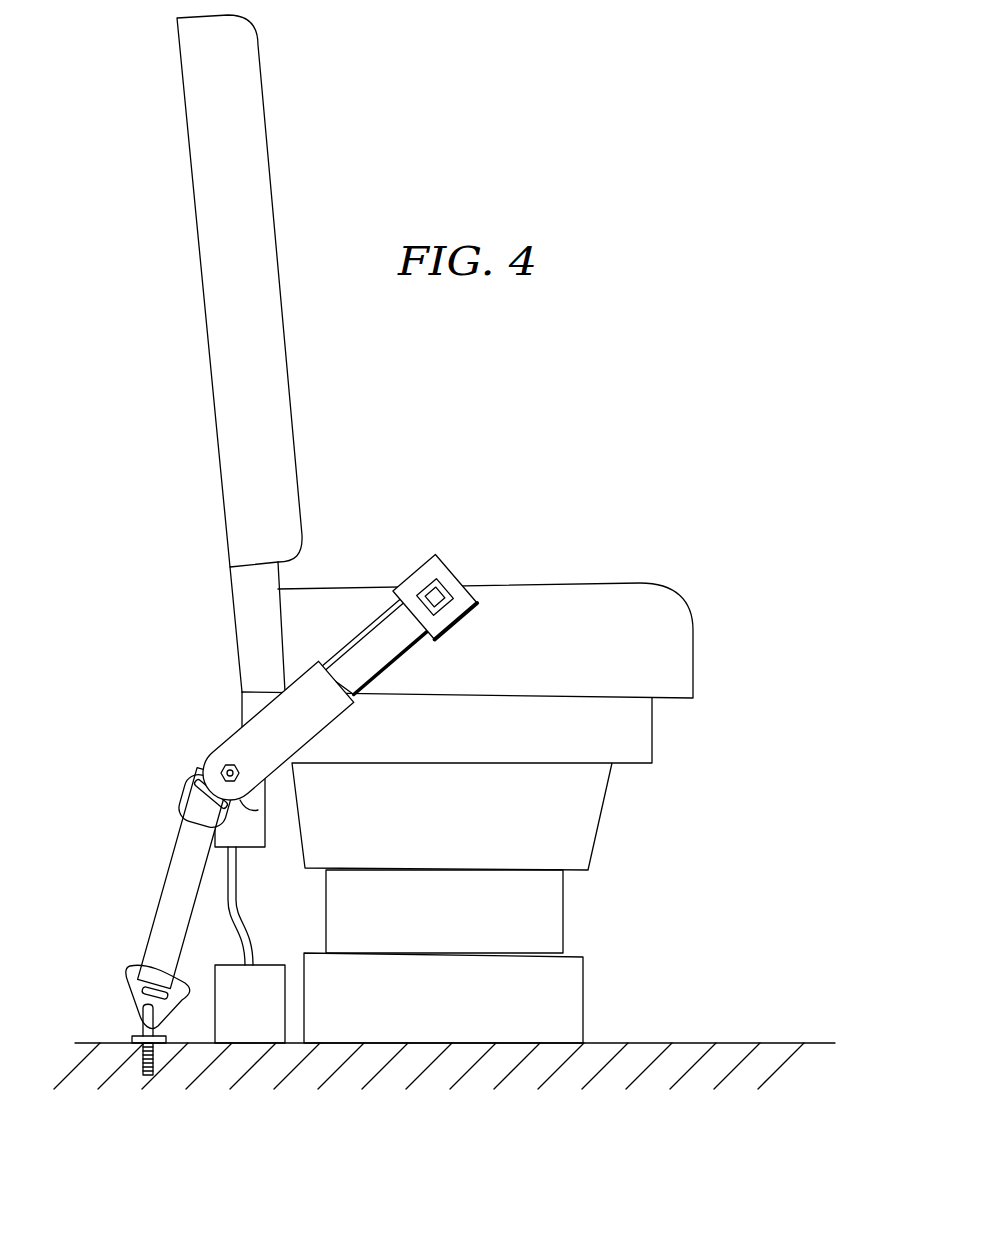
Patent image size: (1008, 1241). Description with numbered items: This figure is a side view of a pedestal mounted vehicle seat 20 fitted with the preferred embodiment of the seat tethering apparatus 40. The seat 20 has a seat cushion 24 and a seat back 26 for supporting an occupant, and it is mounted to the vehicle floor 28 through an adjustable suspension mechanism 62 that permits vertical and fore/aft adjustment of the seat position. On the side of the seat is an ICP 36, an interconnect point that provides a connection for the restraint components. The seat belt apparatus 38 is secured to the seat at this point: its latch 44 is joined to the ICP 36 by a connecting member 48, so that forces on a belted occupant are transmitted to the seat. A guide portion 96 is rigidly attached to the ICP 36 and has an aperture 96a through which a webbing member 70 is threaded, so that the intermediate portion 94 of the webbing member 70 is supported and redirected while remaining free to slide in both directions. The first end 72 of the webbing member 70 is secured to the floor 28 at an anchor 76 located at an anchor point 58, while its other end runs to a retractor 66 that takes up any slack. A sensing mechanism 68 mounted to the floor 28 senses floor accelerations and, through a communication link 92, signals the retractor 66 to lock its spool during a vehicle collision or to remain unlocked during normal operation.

The vehicle seat 20 is at (177, 413).
The seat cushion 24 is at (584, 583).
The seat back 26 is at (282, 303).
The vehicle floor 28 is at (707, 1043).
The ICP 36 is at (334, 714).
The seat belt apparatus 38 is at (125, 657).
The seat tethering apparatus 40 is at (118, 783).
The latch 44 is at (454, 569).
The connecting member 48 is at (352, 642).
The anchor point 58 is at (140, 1027).
The adjustable suspension mechanism 62 is at (592, 904).
The retractor 66 is at (256, 858).
The sensing mechanism 68 is at (278, 986).
The webbing member 70 is at (171, 857).
The first end 72 is at (146, 943).
The anchor 76 is at (130, 994).
The communication link 92 is at (254, 940).
The intermediate portion 94 is at (180, 823).
The guide portion 96 is at (186, 772).
The aperture 96a is at (232, 818).